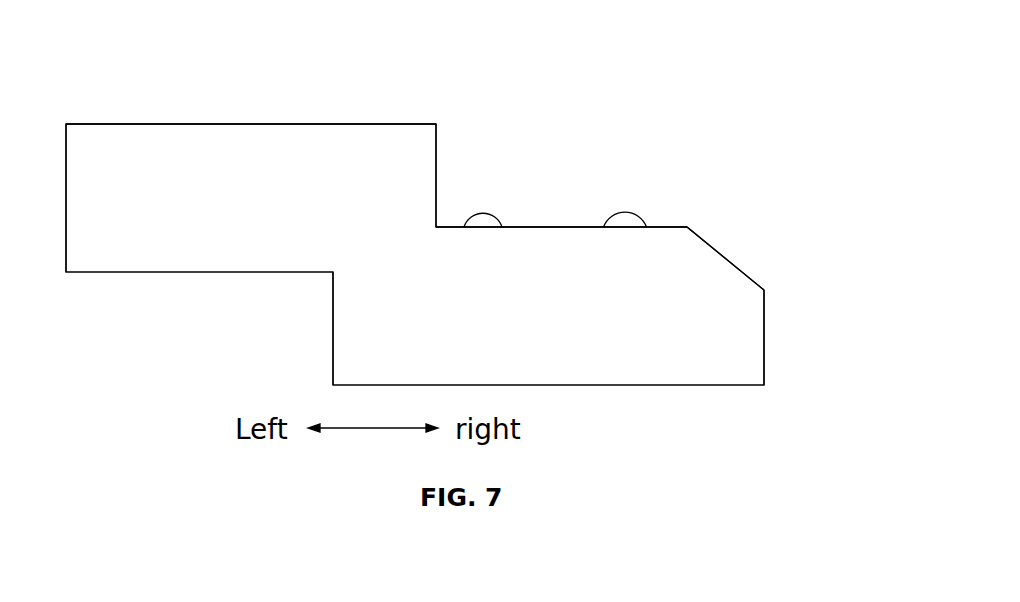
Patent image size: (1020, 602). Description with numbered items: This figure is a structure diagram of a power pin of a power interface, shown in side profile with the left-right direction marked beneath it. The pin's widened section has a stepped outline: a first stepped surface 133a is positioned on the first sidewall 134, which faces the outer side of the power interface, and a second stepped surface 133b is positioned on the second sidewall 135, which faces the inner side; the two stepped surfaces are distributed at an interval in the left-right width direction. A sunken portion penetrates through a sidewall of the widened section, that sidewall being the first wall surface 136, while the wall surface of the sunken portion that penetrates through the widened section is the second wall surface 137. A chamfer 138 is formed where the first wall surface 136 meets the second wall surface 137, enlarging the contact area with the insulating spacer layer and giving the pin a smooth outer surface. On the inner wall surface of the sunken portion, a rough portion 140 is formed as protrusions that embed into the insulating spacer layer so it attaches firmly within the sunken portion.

The first sidewall 134 is at (212, 124).
The first stepped surface 133a is at (436, 177).
The second stepped surface 133b is at (333, 328).
The second sidewall 135 is at (160, 272).
The first wall surface 136 is at (764, 338).
The second wall surface 137 is at (560, 228).
The chamfer 138 is at (722, 255).
The rough portion 140 is at (640, 212).